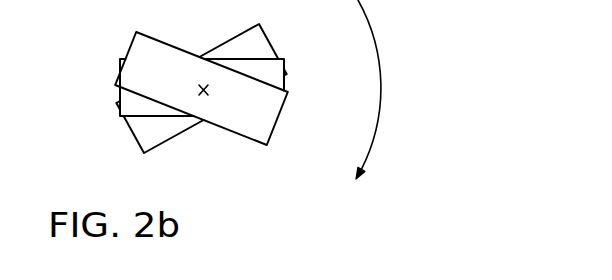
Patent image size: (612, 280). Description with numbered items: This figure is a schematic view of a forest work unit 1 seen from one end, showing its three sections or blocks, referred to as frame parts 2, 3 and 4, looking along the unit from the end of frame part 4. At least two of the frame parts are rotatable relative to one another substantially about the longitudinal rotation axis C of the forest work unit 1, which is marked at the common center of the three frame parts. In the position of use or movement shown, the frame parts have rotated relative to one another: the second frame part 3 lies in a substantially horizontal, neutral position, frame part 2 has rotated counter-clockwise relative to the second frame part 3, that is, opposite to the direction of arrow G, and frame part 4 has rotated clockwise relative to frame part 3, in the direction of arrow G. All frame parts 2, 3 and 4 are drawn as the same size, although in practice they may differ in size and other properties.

The forest work unit 1 is at (88, 74).
The frame part 2 is at (143, 128).
The second frame part 3 is at (267, 72).
The frame part 4 is at (247, 110).
The longitudinal rotation axis C is at (204, 94).
The arrow G is at (388, 89).